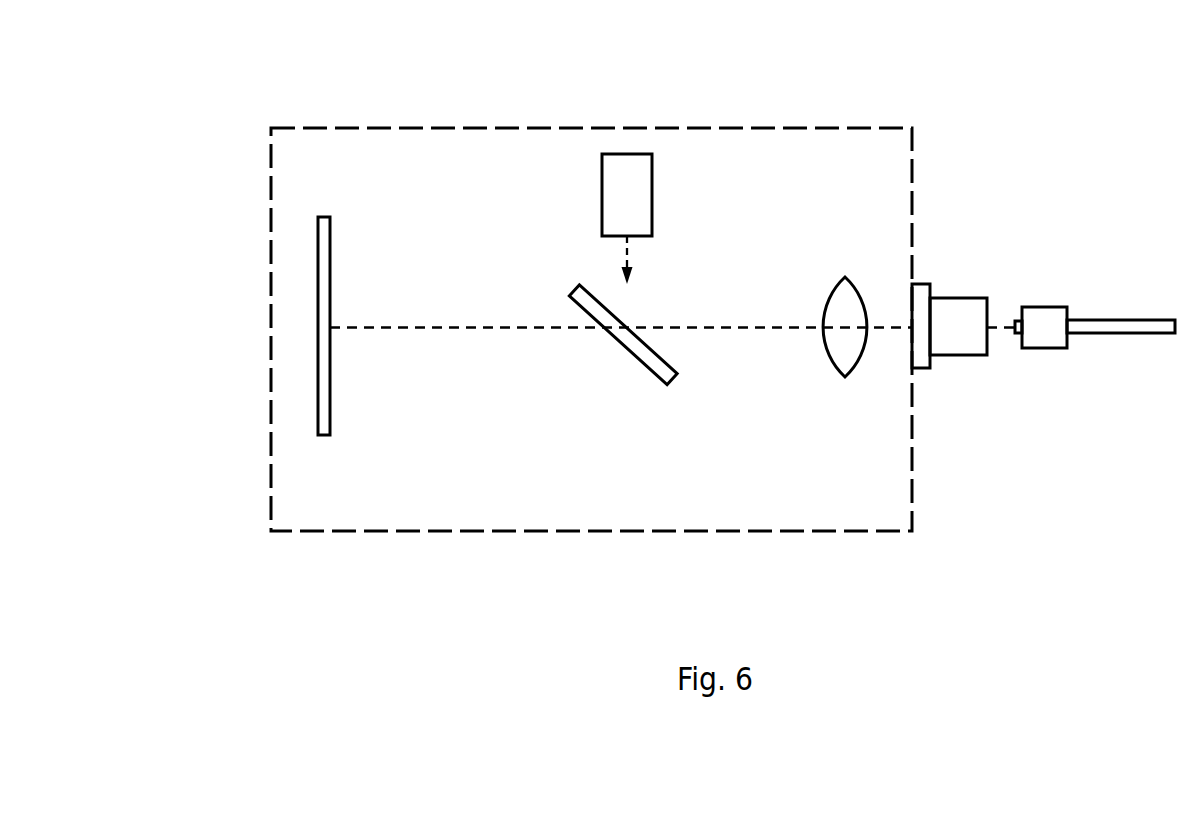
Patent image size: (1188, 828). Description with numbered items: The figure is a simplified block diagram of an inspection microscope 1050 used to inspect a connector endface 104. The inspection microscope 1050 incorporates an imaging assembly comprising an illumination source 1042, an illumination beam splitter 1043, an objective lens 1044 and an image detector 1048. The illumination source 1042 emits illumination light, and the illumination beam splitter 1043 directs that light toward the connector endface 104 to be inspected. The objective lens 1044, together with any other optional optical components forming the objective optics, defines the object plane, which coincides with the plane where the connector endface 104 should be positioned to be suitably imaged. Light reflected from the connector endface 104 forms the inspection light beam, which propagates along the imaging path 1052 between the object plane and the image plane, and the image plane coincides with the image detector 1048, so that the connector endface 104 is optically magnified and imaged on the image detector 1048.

The connector endface 104 is at (1015, 318).
The illumination source 1042 is at (623, 155).
The illumination beam splitter 1043 is at (648, 372).
The objective lens 1044 is at (838, 373).
The image detector 1048 is at (317, 287).
The inspection microscope 1050 is at (591, 329).
The imaging path 1052 is at (752, 325).